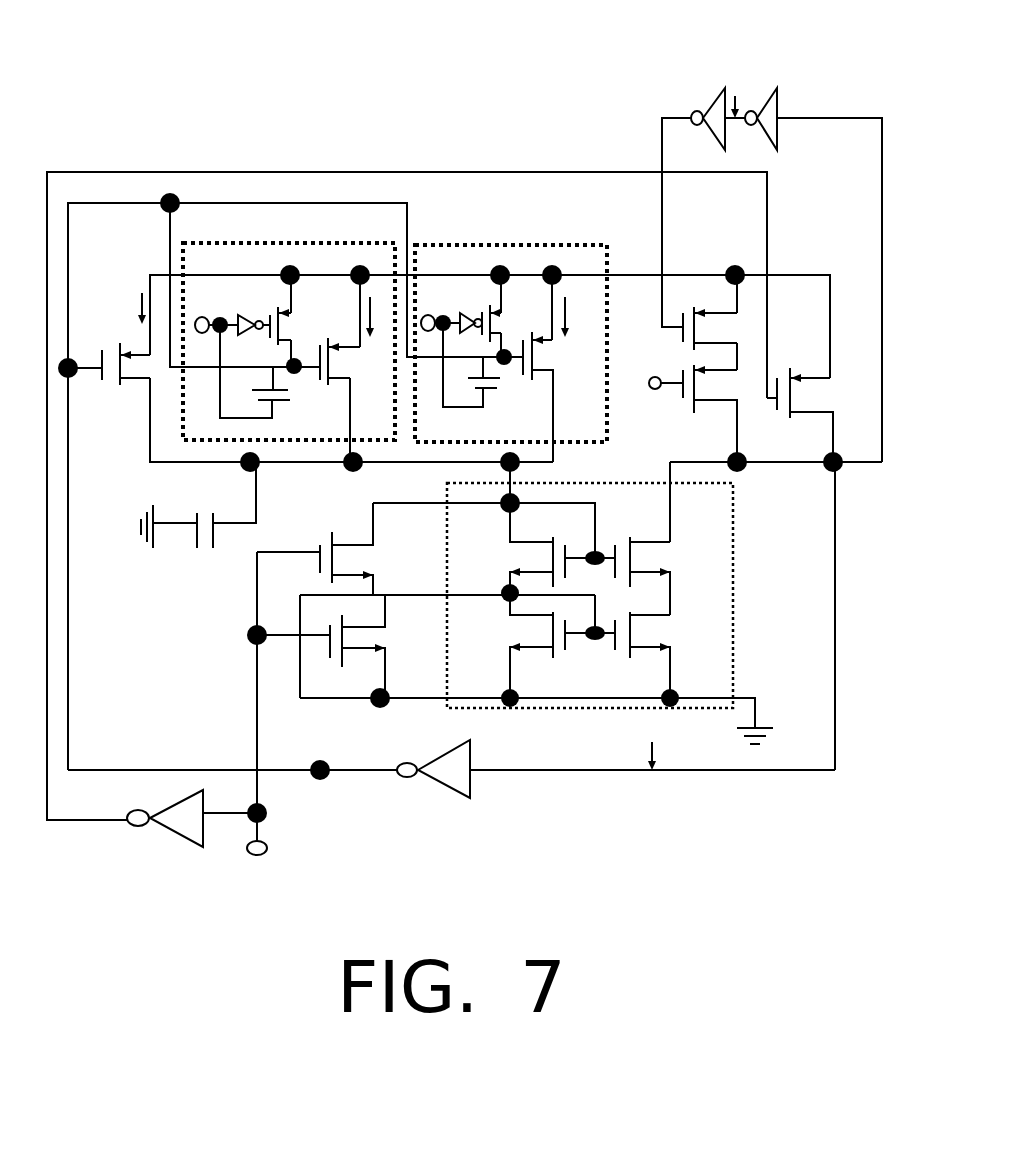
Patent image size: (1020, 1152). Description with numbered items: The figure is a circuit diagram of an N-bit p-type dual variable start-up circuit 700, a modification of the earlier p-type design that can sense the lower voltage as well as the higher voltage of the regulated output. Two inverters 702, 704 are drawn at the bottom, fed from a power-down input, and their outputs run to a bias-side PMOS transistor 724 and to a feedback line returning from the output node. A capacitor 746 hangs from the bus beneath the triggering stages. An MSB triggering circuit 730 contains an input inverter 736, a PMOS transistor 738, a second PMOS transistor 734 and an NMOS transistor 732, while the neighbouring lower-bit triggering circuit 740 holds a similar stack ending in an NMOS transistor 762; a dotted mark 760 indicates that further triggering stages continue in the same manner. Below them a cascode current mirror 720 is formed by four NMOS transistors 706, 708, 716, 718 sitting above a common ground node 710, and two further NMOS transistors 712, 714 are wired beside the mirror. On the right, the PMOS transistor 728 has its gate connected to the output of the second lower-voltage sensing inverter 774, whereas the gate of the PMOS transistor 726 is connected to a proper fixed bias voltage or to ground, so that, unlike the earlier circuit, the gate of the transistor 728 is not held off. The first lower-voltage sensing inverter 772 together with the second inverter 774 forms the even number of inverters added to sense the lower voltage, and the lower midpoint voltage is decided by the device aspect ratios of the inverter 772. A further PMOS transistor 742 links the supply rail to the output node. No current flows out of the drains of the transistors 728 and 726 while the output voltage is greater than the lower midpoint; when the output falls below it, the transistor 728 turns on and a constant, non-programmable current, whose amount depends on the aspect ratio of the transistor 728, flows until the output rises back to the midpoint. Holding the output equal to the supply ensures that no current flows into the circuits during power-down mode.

The N-bit p-type dual variable start-up circuit 700 is at (458, 30).
The inverter 702 is at (447, 792).
The inverter 704 is at (163, 805).
The transistor MN1 706 is at (678, 543).
The transistor MN2 708 is at (677, 615).
The ground node 710 is at (536, 716).
The transistor MNPD1 712 is at (348, 533).
The transistor MNPD2 714 is at (393, 648).
The transistor MN3 716 is at (512, 548).
The transistor MN4 718 is at (530, 640).
The cascode current mirror 720 is at (735, 680).
The transistor MPTB 724 is at (128, 352).
The PMOS transistor 726 is at (723, 393).
The PMOS transistor 728 is at (747, 325).
The MSB triggering circuit 730 is at (370, 243).
The transistor MNT1 732 is at (352, 372).
The PMOS transistor 734 is at (292, 398).
The inverter 736 is at (248, 318).
The PMOS transistor 738 is at (300, 333).
The (MSB-1) triggering circuit 740 is at (637, 213).
The transistor MPPD1 742 is at (837, 372).
The capacitor C1 746 is at (205, 513).
The additional triggering circuits 760 is at (650, 358).
The transistor MNT2 762 is at (543, 357).
The first lower-voltage sensing inverter 772 is at (755, 130).
The second lower-voltage sensing inverter 774 is at (700, 130).